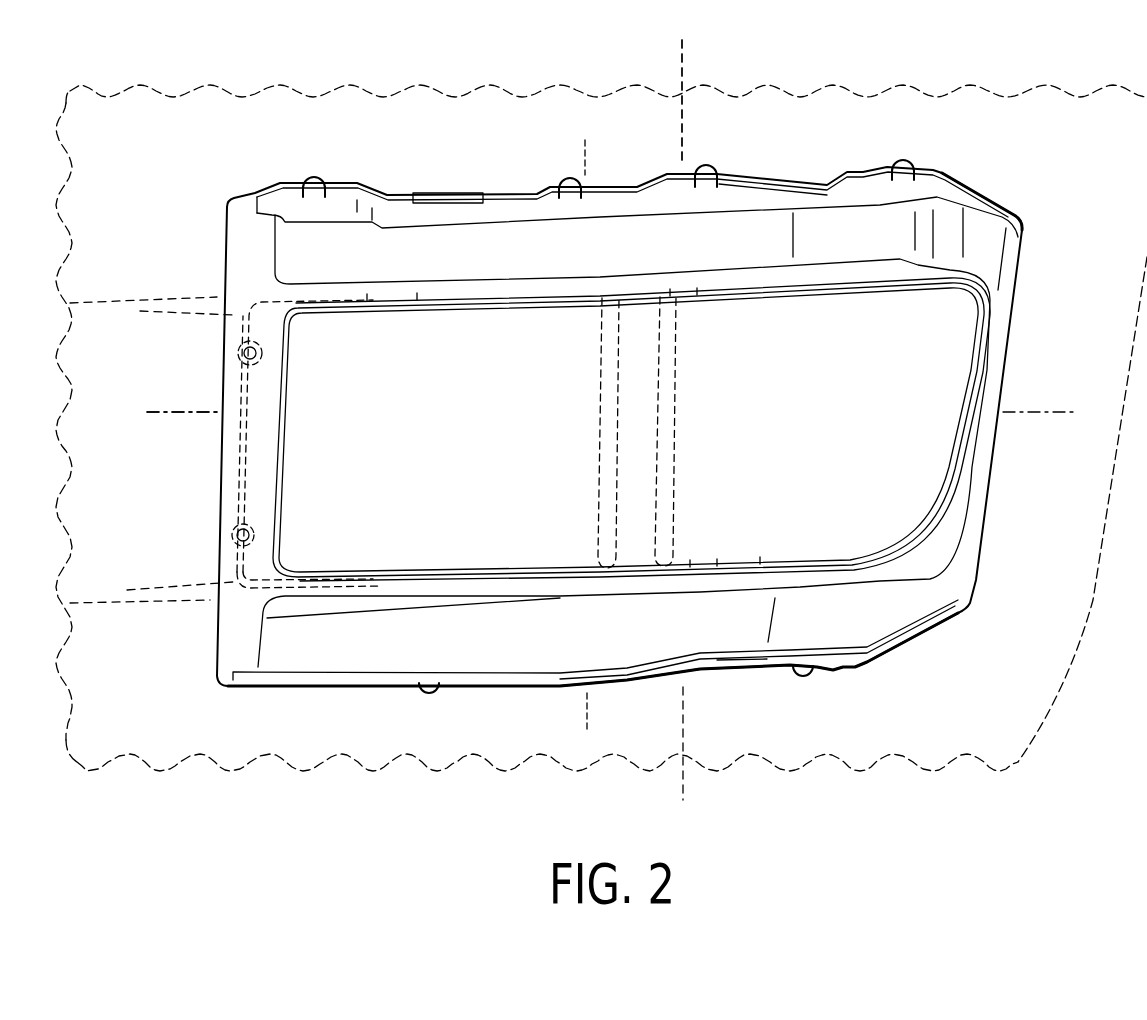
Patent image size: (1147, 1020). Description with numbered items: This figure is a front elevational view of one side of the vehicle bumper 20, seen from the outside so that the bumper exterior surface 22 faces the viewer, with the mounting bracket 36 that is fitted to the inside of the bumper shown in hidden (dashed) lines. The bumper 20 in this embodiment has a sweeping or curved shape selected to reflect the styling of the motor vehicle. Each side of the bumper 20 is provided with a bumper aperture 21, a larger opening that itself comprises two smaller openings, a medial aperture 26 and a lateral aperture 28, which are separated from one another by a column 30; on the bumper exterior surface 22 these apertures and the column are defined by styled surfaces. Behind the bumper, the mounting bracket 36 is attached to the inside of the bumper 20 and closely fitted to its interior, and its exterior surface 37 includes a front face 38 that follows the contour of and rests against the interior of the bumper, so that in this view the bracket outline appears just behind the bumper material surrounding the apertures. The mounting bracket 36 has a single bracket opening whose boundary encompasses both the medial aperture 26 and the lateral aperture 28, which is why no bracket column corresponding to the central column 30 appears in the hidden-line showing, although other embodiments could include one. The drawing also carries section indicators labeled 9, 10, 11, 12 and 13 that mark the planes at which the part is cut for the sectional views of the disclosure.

The bumper 20 is at (163, 130).
The bumper aperture 21 is at (365, 340).
The bumper exterior surface 22 is at (985, 113).
The medial aperture 26 is at (280, 478).
The lateral aperture 28 is at (968, 360).
The column 30 is at (600, 523).
The mounting bracket 36 is at (400, 193).
The exterior surface 37 is at (813, 198).
The front face 38 is at (473, 250).
The section line 9 is at (146, 412).
The section line 10 is at (146, 412).
The section line 11 is at (583, 140).
The section line 12 is at (682, 48).
The section line 13 is at (682, 48).